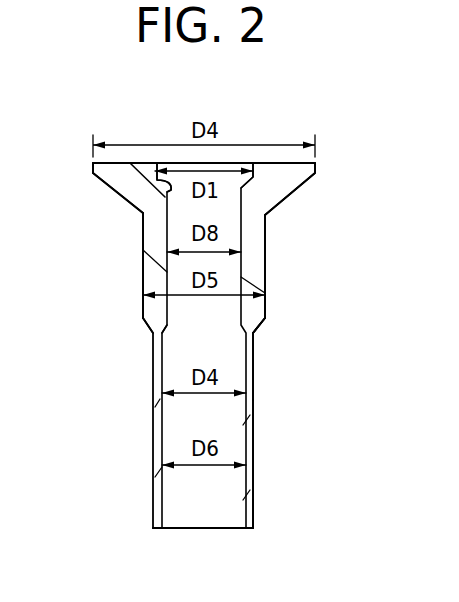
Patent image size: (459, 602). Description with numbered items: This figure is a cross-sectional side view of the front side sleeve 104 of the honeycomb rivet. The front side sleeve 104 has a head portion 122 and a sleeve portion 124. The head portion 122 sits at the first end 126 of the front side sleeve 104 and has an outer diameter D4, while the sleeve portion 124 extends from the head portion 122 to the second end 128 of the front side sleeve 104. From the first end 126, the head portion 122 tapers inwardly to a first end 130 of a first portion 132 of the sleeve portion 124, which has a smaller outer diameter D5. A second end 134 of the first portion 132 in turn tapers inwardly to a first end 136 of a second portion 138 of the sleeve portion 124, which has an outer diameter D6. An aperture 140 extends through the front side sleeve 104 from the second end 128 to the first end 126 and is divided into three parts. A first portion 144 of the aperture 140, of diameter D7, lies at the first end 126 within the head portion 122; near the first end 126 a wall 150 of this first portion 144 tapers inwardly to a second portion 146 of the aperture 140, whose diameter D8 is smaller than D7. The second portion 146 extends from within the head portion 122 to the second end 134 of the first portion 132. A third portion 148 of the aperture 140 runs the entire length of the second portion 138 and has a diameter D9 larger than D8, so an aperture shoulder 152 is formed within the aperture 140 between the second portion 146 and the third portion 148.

The front side sleeve 104 is at (82, 353).
The head portion 122 is at (272, 163).
The sleeve portion 124 is at (263, 313).
The first end 126 is at (273, 163).
The second end 128 is at (237, 530).
The first end of first portion 130 is at (142, 213).
The first portion 132 is at (257, 263).
The second end of first portion 134 is at (152, 332).
The first end of second portion 136 is at (254, 331).
The second portion 138 is at (254, 440).
The aperture 140 is at (183, 517).
The first portion of aperture 144 is at (240, 185).
The second portion of aperture 146 is at (167, 236).
The third portion of aperture 148 is at (254, 362).
The wall 150 is at (147, 193).
The aperture shoulder 152 is at (163, 327).